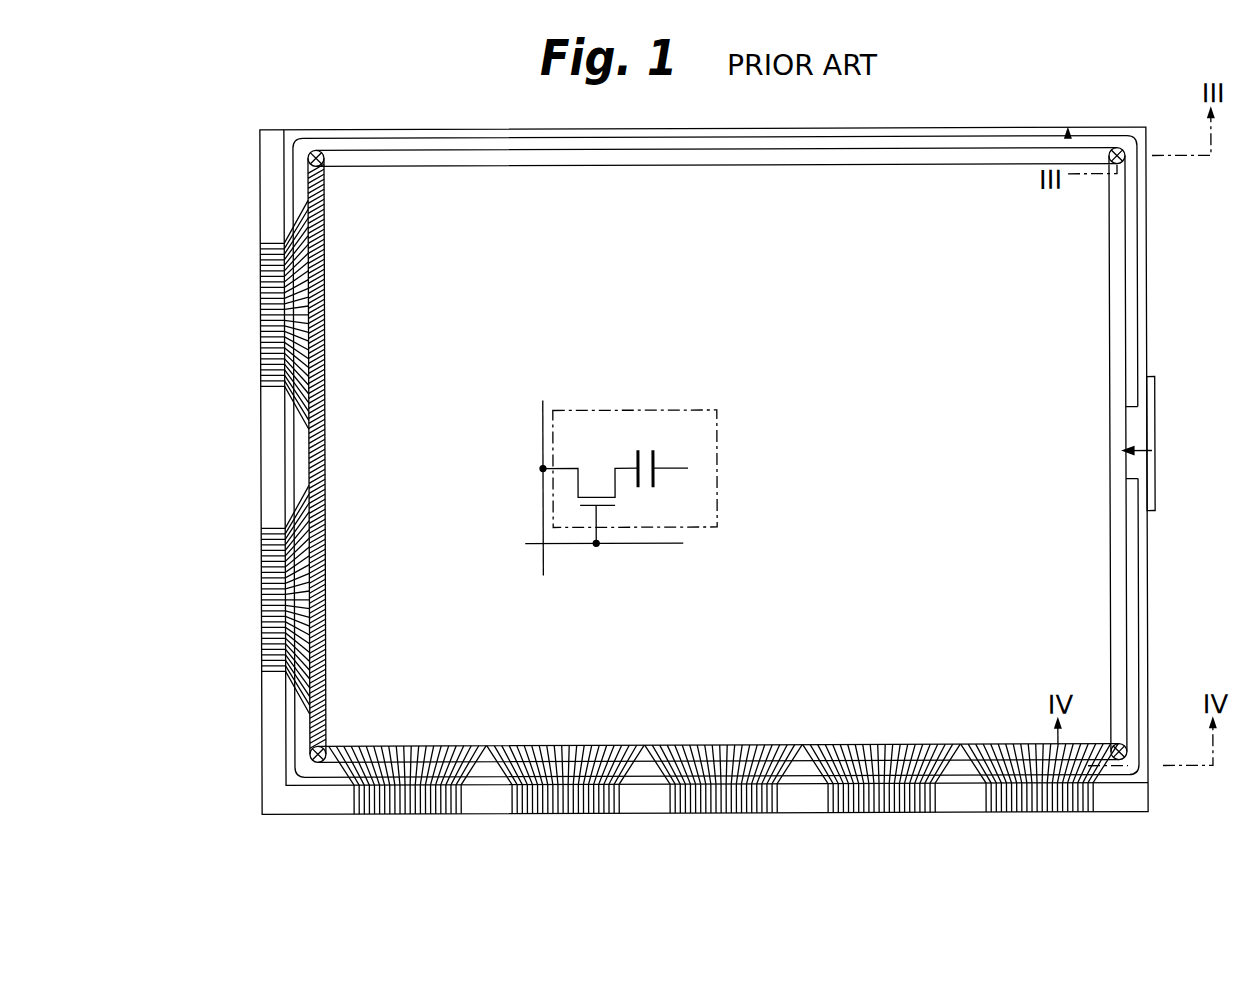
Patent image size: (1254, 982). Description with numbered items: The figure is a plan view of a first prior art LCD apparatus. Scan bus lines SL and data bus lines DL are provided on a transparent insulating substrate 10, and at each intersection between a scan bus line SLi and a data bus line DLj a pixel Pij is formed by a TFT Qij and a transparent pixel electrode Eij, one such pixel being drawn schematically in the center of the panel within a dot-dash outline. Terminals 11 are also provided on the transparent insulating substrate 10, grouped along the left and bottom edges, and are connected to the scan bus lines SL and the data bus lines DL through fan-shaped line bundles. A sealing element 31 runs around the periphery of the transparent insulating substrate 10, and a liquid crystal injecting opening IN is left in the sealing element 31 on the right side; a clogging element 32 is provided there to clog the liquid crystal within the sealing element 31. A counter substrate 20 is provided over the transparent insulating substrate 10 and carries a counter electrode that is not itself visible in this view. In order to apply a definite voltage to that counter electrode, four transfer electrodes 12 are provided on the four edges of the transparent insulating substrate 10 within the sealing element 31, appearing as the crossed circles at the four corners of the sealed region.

The transparent insulating substrate 10 is at (290, 806).
The terminals 11 is at (686, 516).
The transfer electrodes 12 is at (326, 158).
The counter substrate 20 is at (290, 722).
The sealing element 31 is at (1133, 342).
The clogging element 32 is at (1157, 418).
The liquid crystal injecting opening IN is at (1152, 452).
The scan bus lines SL is at (302, 205).
The data bus lines DL is at (740, 809).
The scan bus line SLi is at (581, 546).
The data bus line DLj is at (546, 508).
The pixel Pij is at (629, 451).
The TFT Qij is at (589, 490).
The transparent pixel electrode Eij is at (636, 458).